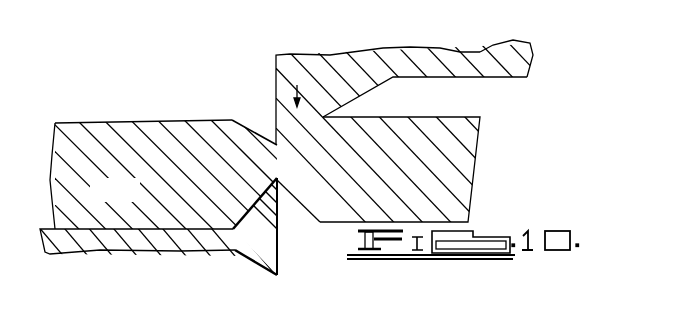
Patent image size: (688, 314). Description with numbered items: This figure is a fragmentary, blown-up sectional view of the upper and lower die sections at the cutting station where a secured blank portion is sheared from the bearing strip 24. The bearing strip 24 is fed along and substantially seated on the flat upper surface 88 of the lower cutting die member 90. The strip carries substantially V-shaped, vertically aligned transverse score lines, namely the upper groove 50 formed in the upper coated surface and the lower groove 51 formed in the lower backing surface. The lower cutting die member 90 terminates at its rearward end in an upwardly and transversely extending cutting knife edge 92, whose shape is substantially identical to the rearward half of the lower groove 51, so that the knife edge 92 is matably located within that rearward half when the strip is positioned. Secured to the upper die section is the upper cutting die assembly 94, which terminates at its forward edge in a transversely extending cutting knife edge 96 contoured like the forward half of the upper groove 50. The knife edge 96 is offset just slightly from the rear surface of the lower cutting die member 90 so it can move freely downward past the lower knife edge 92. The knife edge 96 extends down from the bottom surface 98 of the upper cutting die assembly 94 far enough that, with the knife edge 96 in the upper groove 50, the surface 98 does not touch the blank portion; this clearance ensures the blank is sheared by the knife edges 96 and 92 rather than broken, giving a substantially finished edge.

The bearing strip 24 is at (457, 152).
The upper groove 50 is at (245, 127).
The lower groove 51 is at (313, 216).
The flat upper surface 88 is at (102, 228).
The lower cutting die member 90 is at (98, 271).
The cutting knife edge 92 is at (247, 258).
The upper cutting die assembly 94 is at (520, 57).
The cutting knife edge 96 is at (313, 80).
The bottom surface 98 is at (418, 78).